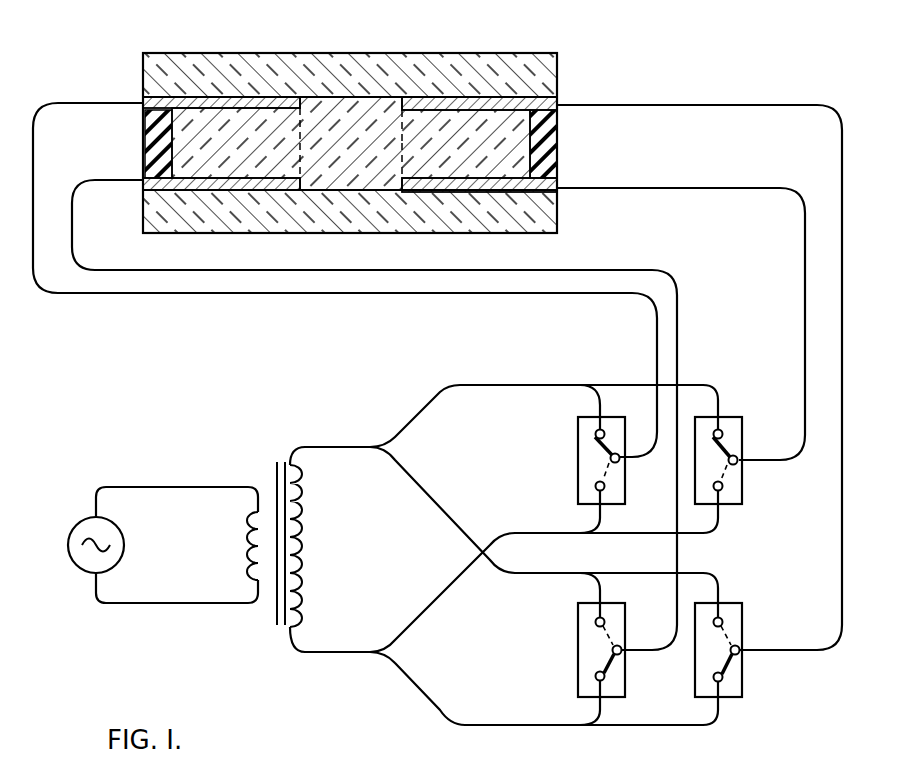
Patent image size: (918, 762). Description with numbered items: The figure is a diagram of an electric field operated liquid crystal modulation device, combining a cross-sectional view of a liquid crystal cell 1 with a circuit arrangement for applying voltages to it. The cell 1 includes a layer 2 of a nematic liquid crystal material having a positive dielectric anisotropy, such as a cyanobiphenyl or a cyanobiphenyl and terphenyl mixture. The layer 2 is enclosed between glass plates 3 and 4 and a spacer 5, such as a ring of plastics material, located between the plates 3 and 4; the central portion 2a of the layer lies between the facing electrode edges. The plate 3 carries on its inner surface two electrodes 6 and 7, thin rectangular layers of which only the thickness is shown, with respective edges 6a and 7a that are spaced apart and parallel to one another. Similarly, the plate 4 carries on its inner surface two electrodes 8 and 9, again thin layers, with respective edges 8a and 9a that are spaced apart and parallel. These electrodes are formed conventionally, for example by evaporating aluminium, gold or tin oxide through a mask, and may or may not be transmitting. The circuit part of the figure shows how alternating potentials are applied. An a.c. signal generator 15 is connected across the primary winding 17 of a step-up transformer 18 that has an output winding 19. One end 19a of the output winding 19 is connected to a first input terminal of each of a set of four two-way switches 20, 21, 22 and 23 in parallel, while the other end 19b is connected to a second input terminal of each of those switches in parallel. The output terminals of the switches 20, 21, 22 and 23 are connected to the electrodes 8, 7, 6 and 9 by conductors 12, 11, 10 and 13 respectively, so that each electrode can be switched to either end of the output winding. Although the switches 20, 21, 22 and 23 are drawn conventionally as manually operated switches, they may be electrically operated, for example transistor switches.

The liquid crystal cell 1 is at (531, 53).
The layer of nematic liquid crystal material 2 is at (558, 150).
The central portion of body 2a is at (356, 218).
The glass plate 3 is at (557, 213).
The glass plate 4 is at (557, 83).
The spacer 5 is at (145, 148).
The electrode 6 is at (150, 200).
The edge 6a is at (316, 195).
The electrode 7 is at (498, 186).
The edge 7a is at (413, 195).
The electrode 8 is at (200, 100).
The edge 8a is at (315, 100).
The electrode 9 is at (483, 100).
The edge 9a is at (390, 95).
The conductor 10 is at (112, 180).
The conductor 11 is at (727, 188).
The conductor 12 is at (78, 103).
The conductor 13 is at (726, 105).
The a.c. signal generator 15 is at (80, 568).
The primary winding 17 is at (245, 537).
The step-up transformer 18 is at (272, 609).
The output winding 19 is at (312, 570).
The end of output winding 19a is at (308, 447).
The end of output winding 19b is at (328, 654).
The two-way switch 20 is at (578, 481).
The two-way switch 21 is at (742, 497).
The two-way switch 22 is at (578, 673).
The two-way switch 23 is at (742, 684).